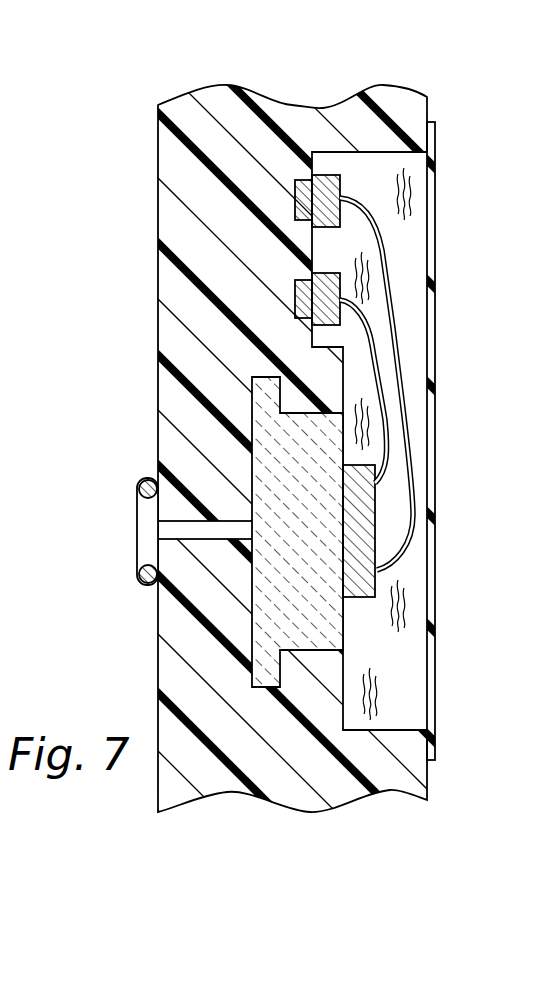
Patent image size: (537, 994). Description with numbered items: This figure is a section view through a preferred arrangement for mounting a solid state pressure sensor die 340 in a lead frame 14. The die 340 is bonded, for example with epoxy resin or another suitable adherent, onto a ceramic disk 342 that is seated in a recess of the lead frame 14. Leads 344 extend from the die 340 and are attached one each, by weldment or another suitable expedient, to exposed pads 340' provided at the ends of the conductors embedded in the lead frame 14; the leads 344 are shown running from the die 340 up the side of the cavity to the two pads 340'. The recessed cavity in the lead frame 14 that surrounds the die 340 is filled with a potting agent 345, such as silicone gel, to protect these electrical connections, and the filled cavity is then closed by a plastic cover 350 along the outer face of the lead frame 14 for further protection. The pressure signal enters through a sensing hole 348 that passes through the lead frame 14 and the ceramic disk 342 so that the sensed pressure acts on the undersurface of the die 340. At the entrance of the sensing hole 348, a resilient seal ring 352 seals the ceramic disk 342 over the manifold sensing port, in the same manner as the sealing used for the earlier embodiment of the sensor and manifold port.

The lead frame 14 is at (152, 212).
The exposed pads 340' is at (387, 191).
The solid state pressure sensor die 340 is at (438, 531).
The ceramic disk 342 is at (308, 597).
The leads 344 is at (378, 340).
The potting agent 345 is at (413, 192).
The sensing hole 348 is at (195, 533).
The plastic cover 350 is at (436, 498).
The resilient seal ring 352 is at (140, 488).